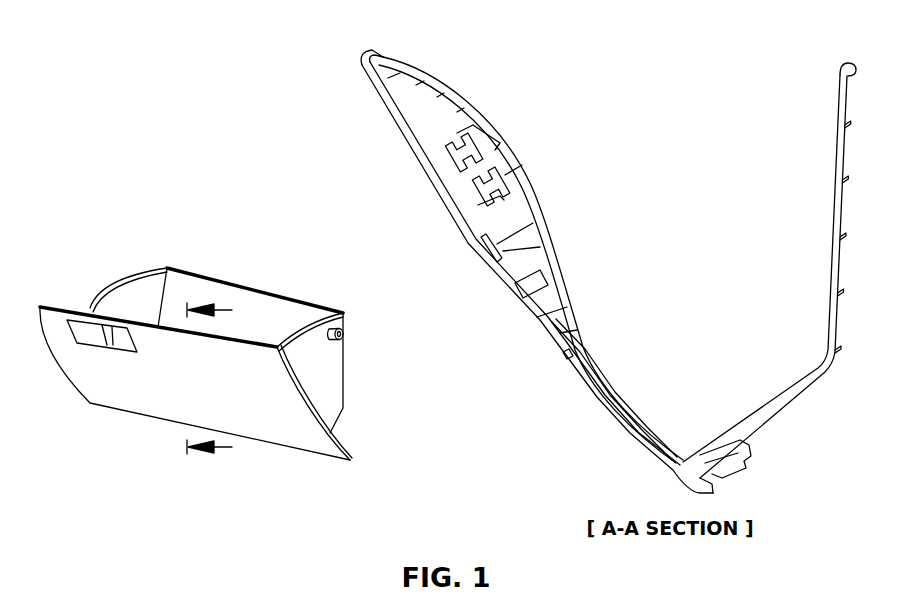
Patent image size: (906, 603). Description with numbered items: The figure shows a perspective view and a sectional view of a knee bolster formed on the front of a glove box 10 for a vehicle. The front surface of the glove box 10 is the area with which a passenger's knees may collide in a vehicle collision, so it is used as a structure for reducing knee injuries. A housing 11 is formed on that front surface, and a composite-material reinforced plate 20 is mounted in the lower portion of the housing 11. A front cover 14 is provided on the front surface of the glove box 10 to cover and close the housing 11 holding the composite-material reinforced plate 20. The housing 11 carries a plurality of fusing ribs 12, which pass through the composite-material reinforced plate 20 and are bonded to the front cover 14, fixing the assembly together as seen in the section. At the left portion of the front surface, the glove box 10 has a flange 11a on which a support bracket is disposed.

The glove box 10 is at (122, 254).
The housing 11 is at (438, 63).
The flange 11a is at (307, 403).
The fusing ribs 12 is at (498, 262).
The front cover 14 is at (157, 397).
The composite-material reinforced plate 20 is at (535, 303).